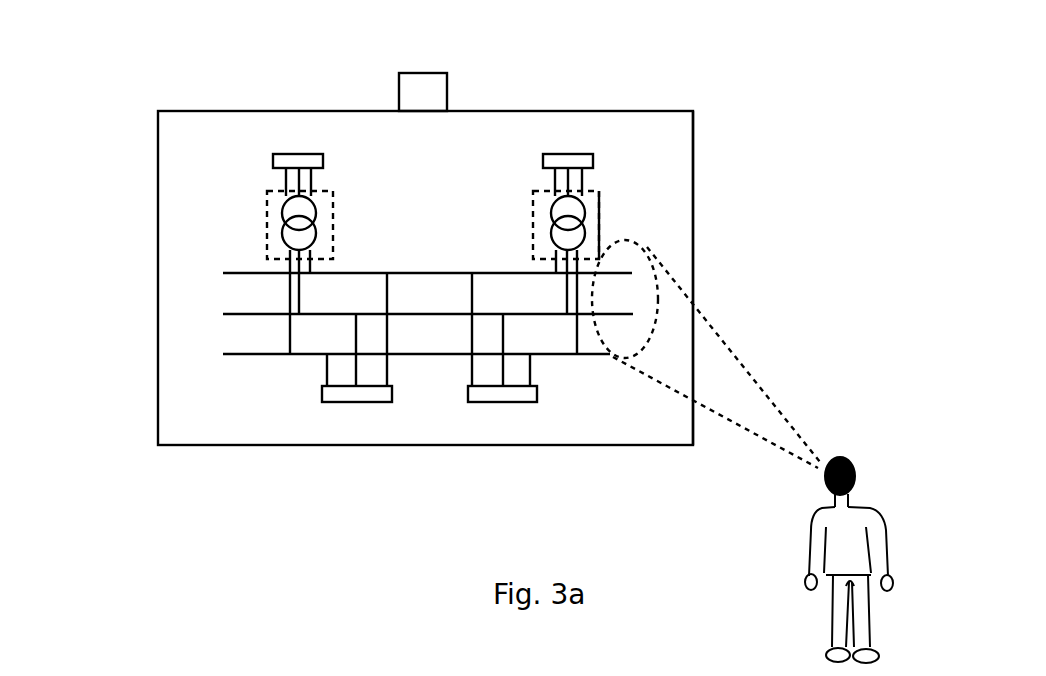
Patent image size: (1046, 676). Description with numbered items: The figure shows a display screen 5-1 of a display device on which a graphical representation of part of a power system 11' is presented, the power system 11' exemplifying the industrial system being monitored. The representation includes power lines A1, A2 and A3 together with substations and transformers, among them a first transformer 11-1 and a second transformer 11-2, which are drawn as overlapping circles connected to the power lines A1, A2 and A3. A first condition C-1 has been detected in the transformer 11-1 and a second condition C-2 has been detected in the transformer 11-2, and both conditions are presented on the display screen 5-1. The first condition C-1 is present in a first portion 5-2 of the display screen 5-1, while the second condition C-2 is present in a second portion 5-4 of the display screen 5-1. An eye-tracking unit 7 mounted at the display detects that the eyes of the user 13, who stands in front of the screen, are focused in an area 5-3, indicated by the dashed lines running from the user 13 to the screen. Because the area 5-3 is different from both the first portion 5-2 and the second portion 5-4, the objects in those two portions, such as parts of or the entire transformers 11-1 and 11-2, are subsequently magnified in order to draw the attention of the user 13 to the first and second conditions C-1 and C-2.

The eye-tracking unit 7 is at (430, 73).
The power system 11' is at (379, 313).
The transformer 11-1 is at (317, 207).
The transformer 11-2 is at (553, 215).
The first condition C-1 is at (275, 212).
The second condition C-2 is at (588, 198).
The display screen 5-1 is at (683, 167).
The first portion 5-2 is at (268, 222).
The area 5-3 is at (643, 246).
The second portion 5-4 is at (600, 214).
The power line A1 is at (431, 265).
The power line A2 is at (431, 305).
The power line A3 is at (431, 345).
The user 13 is at (833, 457).